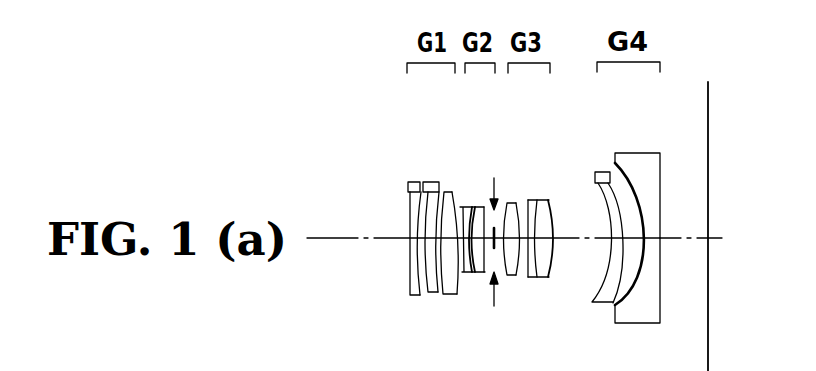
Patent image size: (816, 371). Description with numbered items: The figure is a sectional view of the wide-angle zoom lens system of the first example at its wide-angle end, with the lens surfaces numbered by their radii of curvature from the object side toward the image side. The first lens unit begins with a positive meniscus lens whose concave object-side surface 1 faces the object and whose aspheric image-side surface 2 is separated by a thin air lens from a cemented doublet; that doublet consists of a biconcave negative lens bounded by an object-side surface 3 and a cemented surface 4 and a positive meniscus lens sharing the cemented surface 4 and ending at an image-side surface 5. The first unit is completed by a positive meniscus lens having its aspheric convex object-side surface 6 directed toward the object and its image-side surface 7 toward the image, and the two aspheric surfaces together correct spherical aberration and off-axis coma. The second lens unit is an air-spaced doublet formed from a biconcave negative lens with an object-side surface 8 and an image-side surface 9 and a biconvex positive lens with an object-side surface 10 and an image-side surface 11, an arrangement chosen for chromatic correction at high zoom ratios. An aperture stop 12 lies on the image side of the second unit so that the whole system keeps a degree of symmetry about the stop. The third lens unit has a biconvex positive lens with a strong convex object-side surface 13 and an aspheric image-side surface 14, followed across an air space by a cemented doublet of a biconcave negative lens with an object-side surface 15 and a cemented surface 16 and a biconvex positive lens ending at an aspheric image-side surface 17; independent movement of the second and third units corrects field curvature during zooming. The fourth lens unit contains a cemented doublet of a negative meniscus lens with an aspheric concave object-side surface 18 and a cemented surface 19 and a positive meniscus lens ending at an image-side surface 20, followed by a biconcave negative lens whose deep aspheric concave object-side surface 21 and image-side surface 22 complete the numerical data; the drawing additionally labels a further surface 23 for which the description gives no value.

The object-side surface of first positive meniscus lens 1 is at (408, 194).
The aspheric image-side surface of first positive meniscus lens 2 is at (408, 186).
The object-side surface of biconcave negative lens of first-unit doublet 3 is at (424, 186).
The cemented surface of first-unit doublet 4 is at (440, 190).
The image-side surface of positive meniscus lens of first-unit doublet 5 is at (445, 190).
The aspheric object-side surface of image-side positive meniscus lens of G1 6 is at (455, 190).
The image-side surface of last lens of first lens unit 7 is at (462, 206).
The object-side surface of biconcave negative lens of G2 8 is at (470, 206).
The image-side surface of biconcave negative lens of G2 9 is at (473, 207).
The object-side surface of biconvex positive lens of G2 10 is at (483, 206).
The image-side surface of biconvex positive lens of G2 11 is at (505, 203).
The aperture stop 12 is at (517, 203).
The strong convex object-side surface of biconvex lens of G3 13 is at (530, 200).
The aspheric image-side surface of biconvex lens of G3 14 is at (547, 200).
The object-side surface of biconcave negative lens of G3 doublet 15 is at (552, 200).
The cemented surface of third-unit doublet 16 is at (558, 207).
The aspheric image-side surface of third-unit doublet 17 is at (559, 216).
The aspheric object-side surface of negative meniscus lens of G4 18 is at (596, 174).
The cemented surface of fourth-unit doublet 19 is at (602, 172).
The image-side surface of positive meniscus lens of G4 20 is at (612, 170).
The aspheric object-side surface of biconcave negative lens of G4 21 is at (624, 173).
The image-side surface of biconcave negative lens of G4 22 is at (652, 155).
The lens surface r23 23 is at (660, 208).